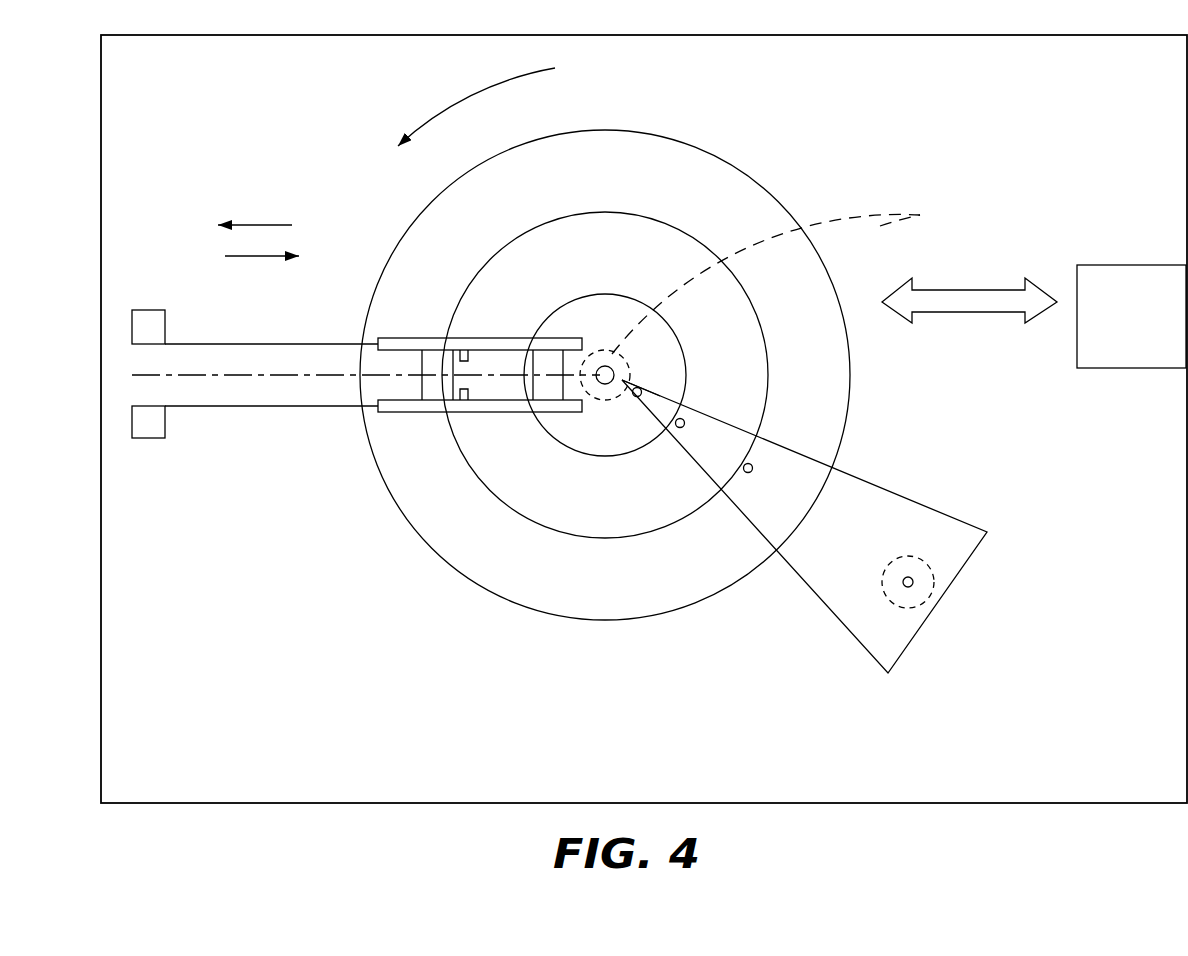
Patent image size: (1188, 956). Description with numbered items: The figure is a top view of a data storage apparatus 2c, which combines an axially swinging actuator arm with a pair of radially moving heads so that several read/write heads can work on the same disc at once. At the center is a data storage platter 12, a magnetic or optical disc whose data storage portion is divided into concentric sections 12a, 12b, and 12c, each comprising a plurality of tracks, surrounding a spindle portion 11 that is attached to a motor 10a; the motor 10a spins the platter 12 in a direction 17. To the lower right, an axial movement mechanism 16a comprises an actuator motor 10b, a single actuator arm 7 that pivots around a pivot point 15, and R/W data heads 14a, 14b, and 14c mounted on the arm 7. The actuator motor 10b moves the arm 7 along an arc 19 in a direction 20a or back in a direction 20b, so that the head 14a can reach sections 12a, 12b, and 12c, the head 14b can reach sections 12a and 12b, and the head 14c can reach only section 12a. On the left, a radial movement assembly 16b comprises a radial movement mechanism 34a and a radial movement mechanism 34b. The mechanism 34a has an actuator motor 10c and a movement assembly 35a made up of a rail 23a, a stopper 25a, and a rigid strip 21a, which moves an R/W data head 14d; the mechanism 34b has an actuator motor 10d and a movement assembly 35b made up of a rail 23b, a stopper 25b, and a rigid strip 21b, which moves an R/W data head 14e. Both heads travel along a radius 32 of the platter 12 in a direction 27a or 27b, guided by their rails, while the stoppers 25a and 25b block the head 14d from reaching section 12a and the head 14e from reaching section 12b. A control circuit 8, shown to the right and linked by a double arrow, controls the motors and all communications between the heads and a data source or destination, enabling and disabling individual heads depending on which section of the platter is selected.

The data storage apparatus 2c is at (74, 129).
The single actuator arm 7 is at (923, 503).
The control circuit 8 is at (1123, 356).
The motor 10a is at (629, 367).
The actuator motor 10b is at (928, 568).
The actuator motor 10c is at (148, 310).
The actuator motor 10d is at (148, 438).
The spindle portion 11 is at (605, 385).
The data storage platter 12 is at (752, 178).
The section 12a is at (628, 186).
The section 12b is at (628, 268).
The section 12c is at (628, 332).
The R/W data head 14a is at (637, 397).
The R/W data head 14b is at (683, 427).
The R/W data head 14c is at (751, 472).
The R/W data head 14d is at (540, 393).
The R/W data head 14e is at (438, 393).
The pivot point 15 is at (913, 582).
The axial movement mechanism 16a is at (898, 438).
The radial movement assembly 16b is at (343, 234).
The direction 17 is at (440, 110).
The arc 19 is at (753, 262).
The direction 20a is at (921, 214).
The direction 20b is at (624, 380).
The rigid strip 21a is at (200, 344).
The rigid strip 21b is at (200, 406).
The rail 23a is at (415, 338).
The rail 23b is at (407, 412).
The stopper 25a is at (467, 350).
The stopper 25b is at (467, 400).
The direction 27a is at (250, 225).
The direction 27b is at (275, 257).
The radius 32 is at (150, 376).
The radial movement mechanism 34a is at (147, 230).
The radial movement mechanism 34b is at (147, 537).
The movement assembly 35a is at (377, 337).
The movement assembly 35b is at (377, 413).